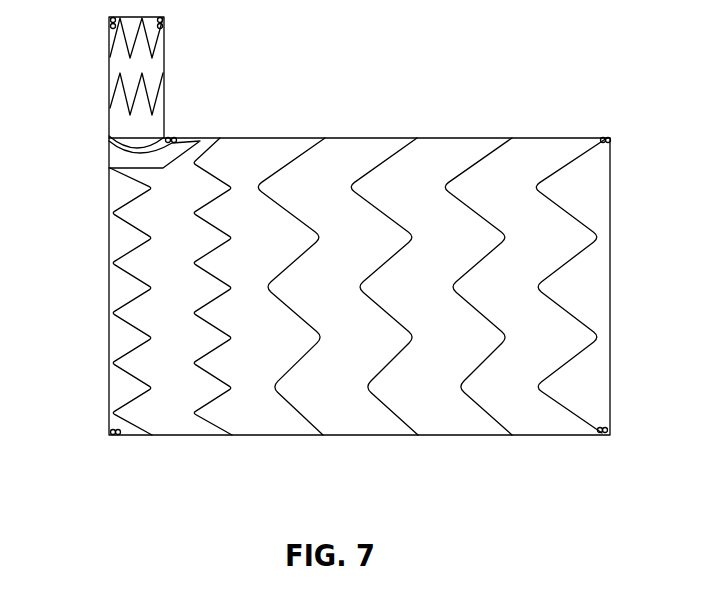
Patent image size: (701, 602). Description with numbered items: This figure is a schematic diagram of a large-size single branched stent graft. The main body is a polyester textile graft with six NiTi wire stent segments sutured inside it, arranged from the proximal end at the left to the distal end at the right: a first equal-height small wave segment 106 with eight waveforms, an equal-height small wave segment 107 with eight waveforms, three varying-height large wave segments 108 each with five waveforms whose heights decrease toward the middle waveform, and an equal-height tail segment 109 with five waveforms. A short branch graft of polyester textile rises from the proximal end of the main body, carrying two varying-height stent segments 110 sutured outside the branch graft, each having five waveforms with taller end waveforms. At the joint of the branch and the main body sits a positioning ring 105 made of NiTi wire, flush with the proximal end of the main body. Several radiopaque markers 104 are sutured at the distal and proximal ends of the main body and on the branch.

The radiopaque markers 104 is at (109, 432).
The positioning ring 105 is at (178, 140).
The first equal-height small wave segment 106 is at (141, 430).
The equal-height small wave segment 107 is at (213, 425).
The varying-height large wave segments 108 is at (488, 415).
The equal-height tail segment 109 is at (560, 407).
The varying-height stent segments 110 is at (117, 32).